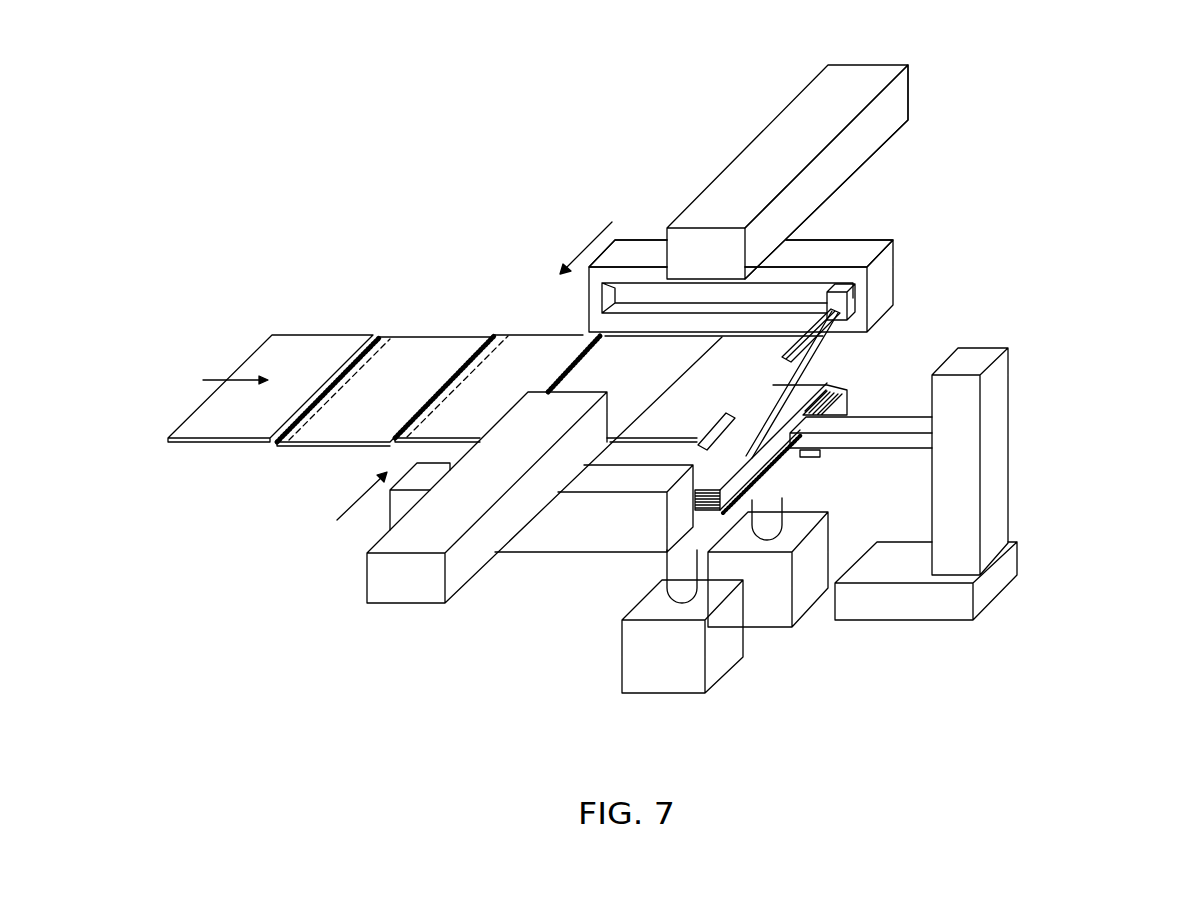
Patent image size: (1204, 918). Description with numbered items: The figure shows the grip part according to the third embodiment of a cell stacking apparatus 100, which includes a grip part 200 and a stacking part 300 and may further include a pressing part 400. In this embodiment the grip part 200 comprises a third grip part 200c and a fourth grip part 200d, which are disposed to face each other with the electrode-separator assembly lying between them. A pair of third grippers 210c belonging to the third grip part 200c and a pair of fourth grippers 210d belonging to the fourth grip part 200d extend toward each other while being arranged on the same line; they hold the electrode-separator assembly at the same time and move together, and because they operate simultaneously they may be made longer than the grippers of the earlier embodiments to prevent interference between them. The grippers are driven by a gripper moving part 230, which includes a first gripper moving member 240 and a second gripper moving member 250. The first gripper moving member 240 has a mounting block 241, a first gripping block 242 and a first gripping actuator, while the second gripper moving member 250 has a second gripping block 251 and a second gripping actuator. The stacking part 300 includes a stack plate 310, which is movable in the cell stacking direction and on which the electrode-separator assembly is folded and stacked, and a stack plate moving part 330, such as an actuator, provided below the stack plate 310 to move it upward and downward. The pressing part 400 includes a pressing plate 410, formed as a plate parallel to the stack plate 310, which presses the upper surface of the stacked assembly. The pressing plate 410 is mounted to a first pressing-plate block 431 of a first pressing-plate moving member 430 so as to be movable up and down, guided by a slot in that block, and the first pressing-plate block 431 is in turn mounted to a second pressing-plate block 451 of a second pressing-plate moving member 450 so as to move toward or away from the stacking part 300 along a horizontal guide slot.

The cell stacking apparatus 100 is at (372, 66).
The grip part 200 is at (263, 184).
The third grip part 200c is at (744, 100).
The fourth grip part 200d is at (347, 543).
The third grippers 210c is at (840, 325).
The fourth grippers 210d is at (688, 452).
The gripper moving part 230 is at (1072, 152).
The first gripper moving member 240 is at (968, 228).
The mounting block 241 is at (865, 278).
The first gripping block 242 is at (848, 248).
The second gripper moving member 250 is at (988, 152).
The second gripping block 251 is at (880, 128).
The stacking part 300 is at (787, 708).
The stack plate 310 is at (705, 530).
The stack plate moving part 330 is at (673, 682).
The pressing part 400 is at (898, 492).
The pressing plate 410 is at (798, 450).
The first pressing-plate moving member 430 is at (1112, 441).
The first pressing-plate block 431 is at (965, 463).
The second pressing-plate moving member 450 is at (897, 697).
The second pressing-plate block 451 is at (902, 612).